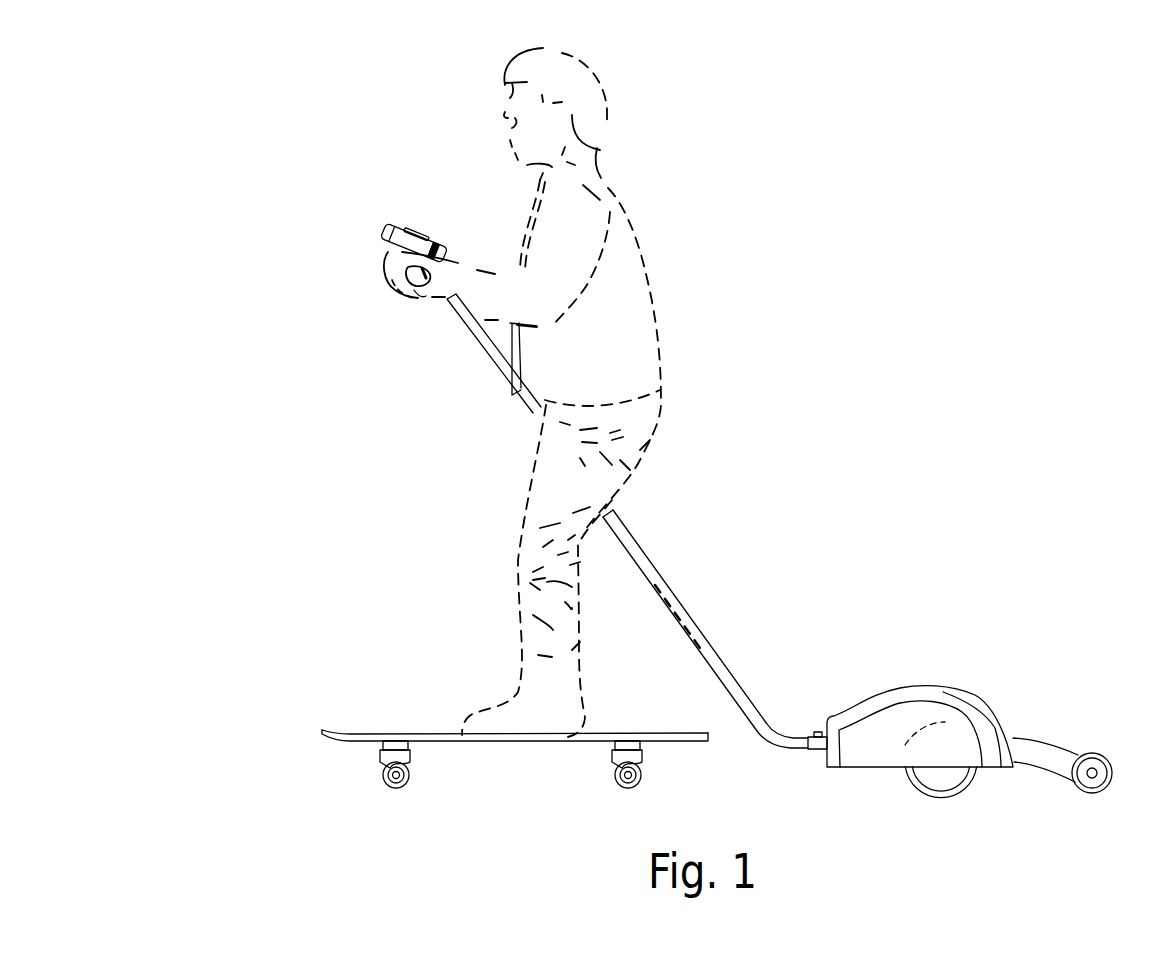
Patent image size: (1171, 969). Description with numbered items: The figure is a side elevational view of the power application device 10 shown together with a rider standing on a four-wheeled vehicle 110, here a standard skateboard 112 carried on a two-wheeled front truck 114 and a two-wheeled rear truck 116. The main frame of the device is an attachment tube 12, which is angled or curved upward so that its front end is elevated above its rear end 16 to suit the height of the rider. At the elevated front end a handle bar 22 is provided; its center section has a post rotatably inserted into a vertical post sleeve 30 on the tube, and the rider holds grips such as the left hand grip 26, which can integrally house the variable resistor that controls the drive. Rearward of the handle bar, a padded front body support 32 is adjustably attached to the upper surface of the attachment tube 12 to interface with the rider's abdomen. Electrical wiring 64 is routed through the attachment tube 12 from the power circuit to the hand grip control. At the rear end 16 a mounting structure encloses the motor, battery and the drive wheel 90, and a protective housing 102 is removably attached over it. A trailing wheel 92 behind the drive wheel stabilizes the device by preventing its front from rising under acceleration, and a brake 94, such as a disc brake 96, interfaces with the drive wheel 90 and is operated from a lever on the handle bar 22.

The power application device 10 is at (762, 477).
The attachment tube 12 is at (483, 350).
The rear end 16 is at (823, 733).
The handle bar 22 is at (385, 238).
The left hand grip 26 is at (420, 303).
The vertical post sleeve 30 is at (410, 233).
The front body support 32 is at (512, 385).
The electrical wiring 64 is at (677, 601).
The drive wheel 90 is at (970, 780).
The trailing wheel 92 is at (1110, 782).
The brake 94 is at (925, 733).
The disc brake 96 is at (923, 740).
The protective housing 102 is at (912, 697).
The four-wheeled vehicle 110 is at (340, 738).
The skateboard 112 is at (515, 735).
The front truck 114 is at (407, 767).
The rear truck 116 is at (640, 777).